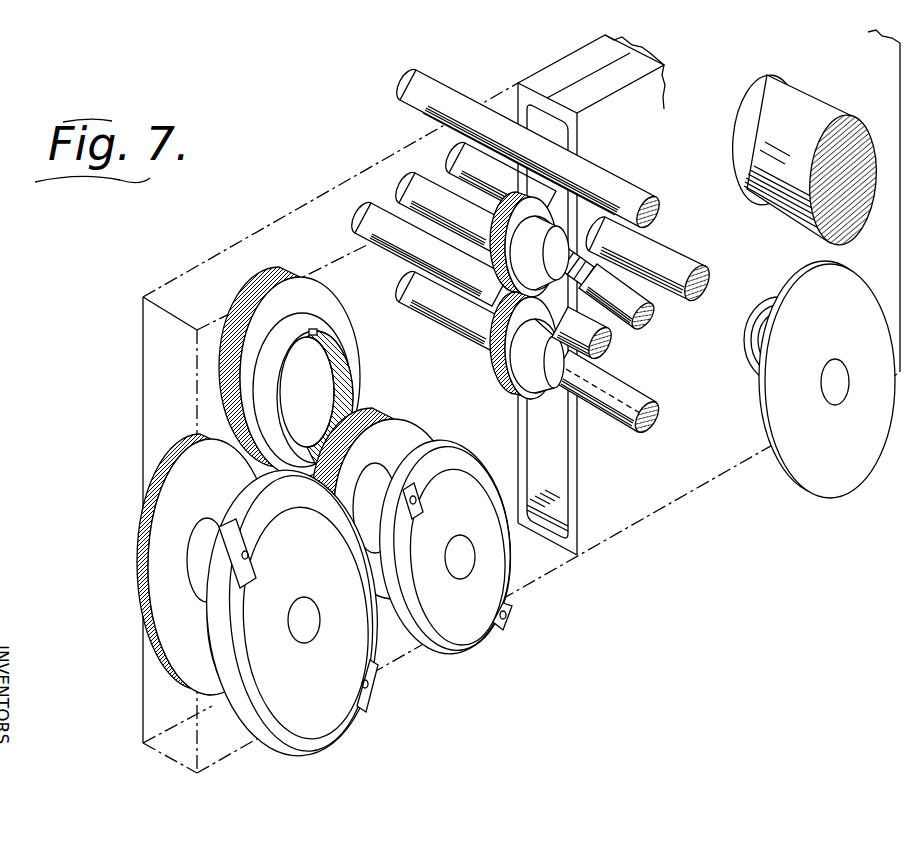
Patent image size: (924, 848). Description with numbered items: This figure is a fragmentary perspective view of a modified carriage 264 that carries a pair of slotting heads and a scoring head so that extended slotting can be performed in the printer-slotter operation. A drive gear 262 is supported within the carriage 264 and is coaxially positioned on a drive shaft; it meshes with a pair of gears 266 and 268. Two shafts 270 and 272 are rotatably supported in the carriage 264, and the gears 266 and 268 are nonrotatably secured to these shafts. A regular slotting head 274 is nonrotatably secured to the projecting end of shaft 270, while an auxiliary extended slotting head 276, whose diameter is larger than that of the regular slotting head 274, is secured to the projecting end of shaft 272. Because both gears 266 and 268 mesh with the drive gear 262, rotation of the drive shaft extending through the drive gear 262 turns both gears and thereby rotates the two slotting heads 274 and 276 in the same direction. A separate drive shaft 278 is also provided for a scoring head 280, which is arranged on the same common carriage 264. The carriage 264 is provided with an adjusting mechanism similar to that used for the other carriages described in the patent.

The drive gear 262 is at (253, 273).
The carriage 264 is at (330, 200).
The gear 266 is at (380, 417).
The gear 268 is at (146, 510).
The shaft 270 is at (467, 557).
The shaft 272 is at (312, 632).
The regular slotting head 274 is at (490, 588).
The auxiliary extended slotting head 276 is at (374, 677).
The drive shaft 278 is at (815, 94).
The scoring head 280 is at (826, 475).